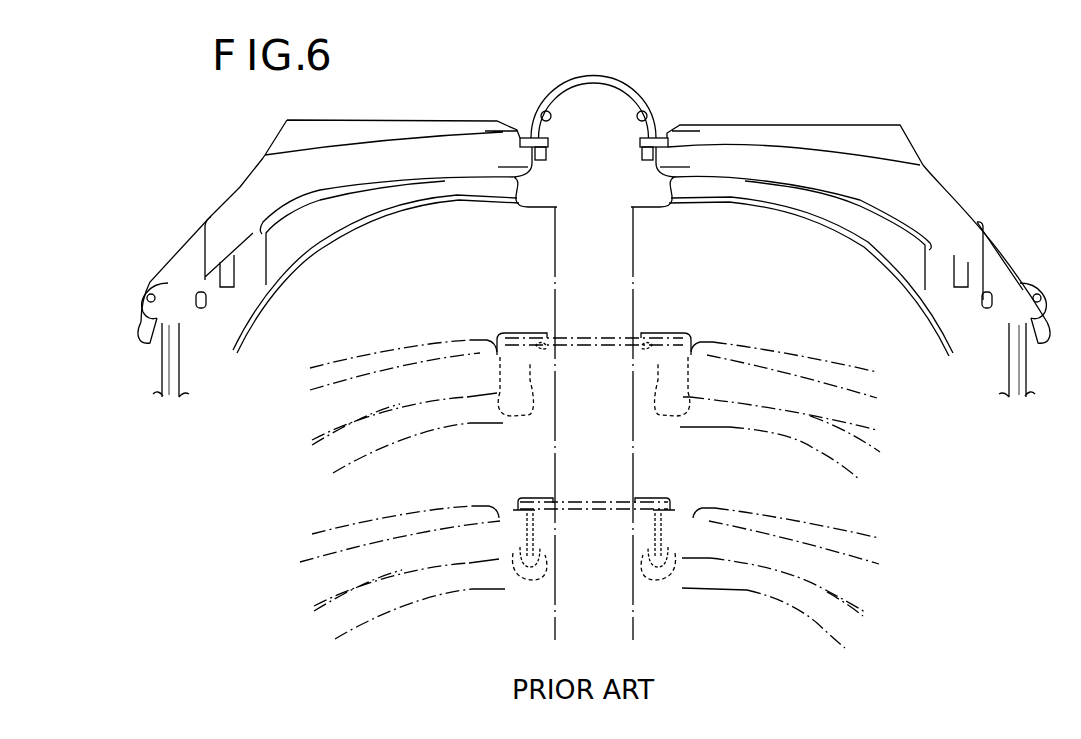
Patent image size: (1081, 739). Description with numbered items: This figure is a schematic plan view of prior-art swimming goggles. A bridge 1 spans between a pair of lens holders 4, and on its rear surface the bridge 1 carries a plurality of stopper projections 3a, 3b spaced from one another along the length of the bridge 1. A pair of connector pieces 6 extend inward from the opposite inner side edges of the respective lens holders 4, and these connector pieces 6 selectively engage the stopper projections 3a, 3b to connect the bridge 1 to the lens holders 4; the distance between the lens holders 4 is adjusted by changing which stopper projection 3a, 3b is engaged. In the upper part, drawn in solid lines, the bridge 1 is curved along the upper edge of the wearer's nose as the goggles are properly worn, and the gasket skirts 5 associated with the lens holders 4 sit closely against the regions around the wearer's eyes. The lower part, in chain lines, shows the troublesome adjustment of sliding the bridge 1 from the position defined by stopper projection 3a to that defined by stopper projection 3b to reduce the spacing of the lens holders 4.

The bridge 1 is at (616, 81).
The stopper projection 3a is at (541, 152).
The stopper projection 3b is at (549, 112).
The lens holder 4 is at (415, 150).
The gasket skirt 5 is at (454, 190).
The connector piece 6 is at (549, 144).